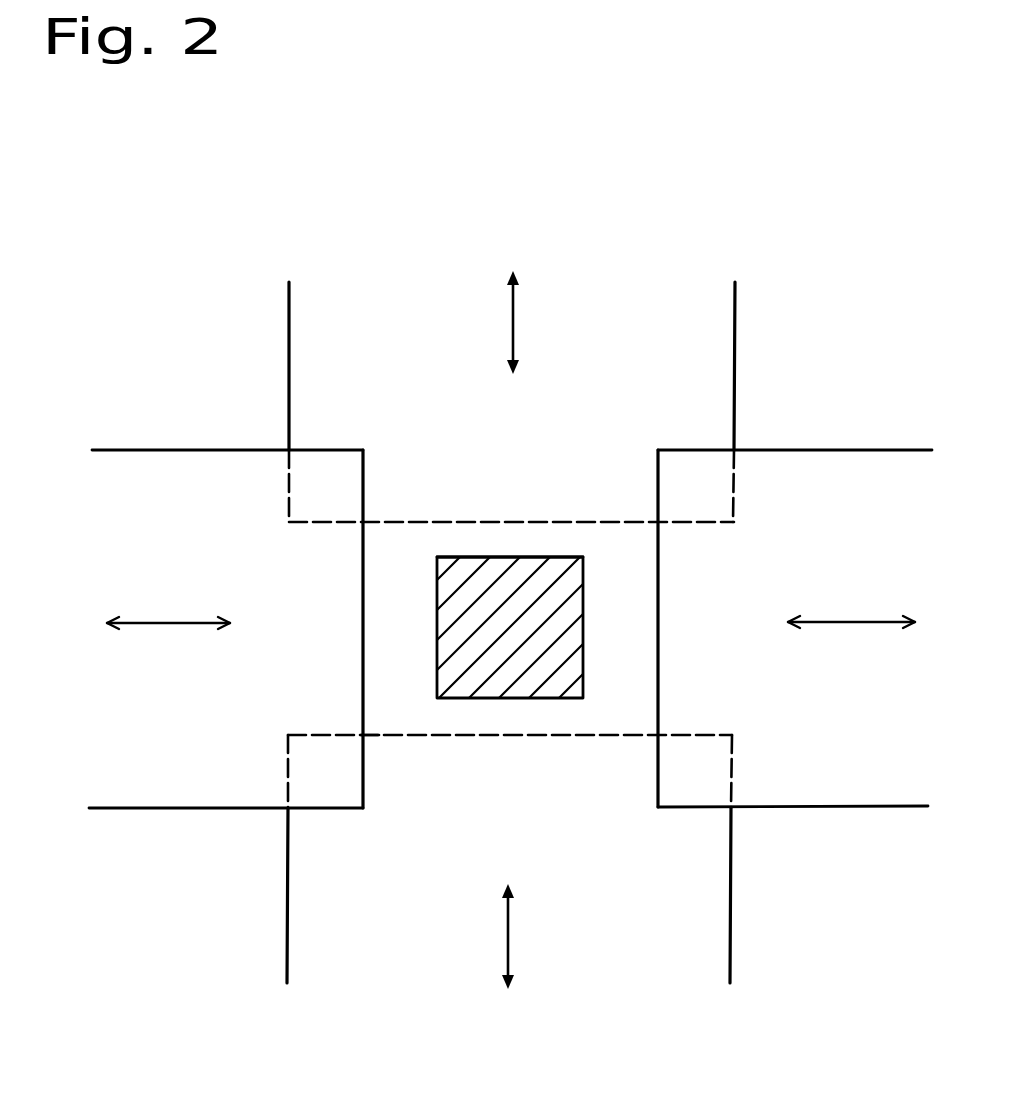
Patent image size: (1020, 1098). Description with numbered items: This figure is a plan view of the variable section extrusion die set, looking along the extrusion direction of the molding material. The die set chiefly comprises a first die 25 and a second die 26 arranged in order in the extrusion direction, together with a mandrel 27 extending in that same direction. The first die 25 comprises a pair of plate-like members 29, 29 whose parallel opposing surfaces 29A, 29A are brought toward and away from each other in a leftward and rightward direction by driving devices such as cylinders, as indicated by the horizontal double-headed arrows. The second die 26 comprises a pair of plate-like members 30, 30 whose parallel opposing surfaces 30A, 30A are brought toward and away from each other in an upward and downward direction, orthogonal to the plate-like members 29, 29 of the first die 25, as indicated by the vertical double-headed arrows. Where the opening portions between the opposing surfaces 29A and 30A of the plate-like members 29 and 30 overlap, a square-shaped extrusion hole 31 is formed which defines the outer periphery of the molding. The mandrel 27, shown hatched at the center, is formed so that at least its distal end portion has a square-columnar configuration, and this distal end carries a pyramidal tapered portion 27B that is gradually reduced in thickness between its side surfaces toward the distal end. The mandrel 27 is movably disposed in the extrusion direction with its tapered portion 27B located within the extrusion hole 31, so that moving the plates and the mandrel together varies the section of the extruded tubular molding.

The first die 25 is at (818, 831).
The second die 26 is at (768, 958).
The mandrel 27 is at (590, 580).
The pyramidal tapered portion 27B is at (540, 561).
The plate-like member 29 is at (166, 465).
The opposing surface 29A is at (366, 634).
The plate-like member 30 is at (718, 322).
The opposing surface 30A is at (456, 520).
The extrusion hole 31 is at (392, 712).